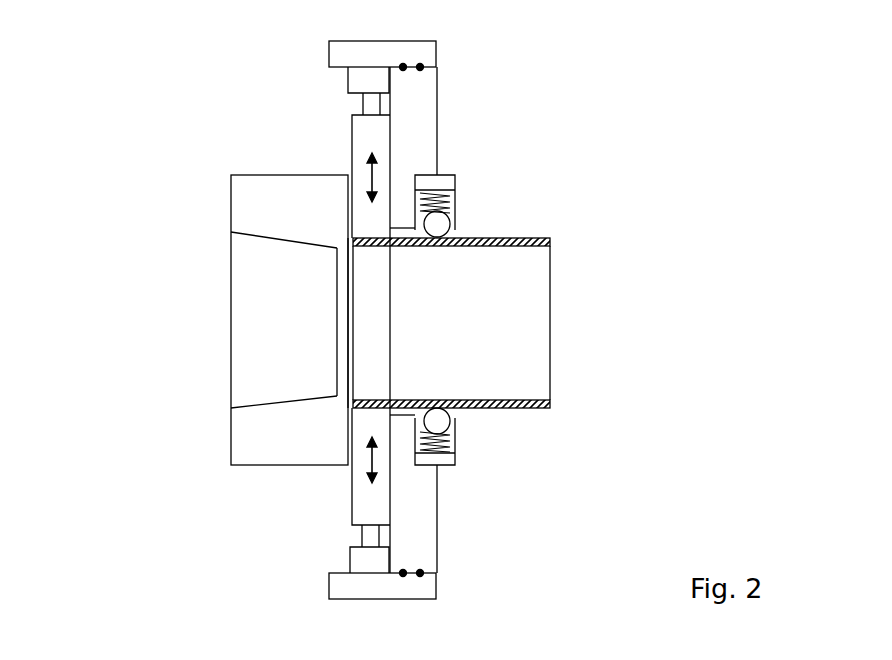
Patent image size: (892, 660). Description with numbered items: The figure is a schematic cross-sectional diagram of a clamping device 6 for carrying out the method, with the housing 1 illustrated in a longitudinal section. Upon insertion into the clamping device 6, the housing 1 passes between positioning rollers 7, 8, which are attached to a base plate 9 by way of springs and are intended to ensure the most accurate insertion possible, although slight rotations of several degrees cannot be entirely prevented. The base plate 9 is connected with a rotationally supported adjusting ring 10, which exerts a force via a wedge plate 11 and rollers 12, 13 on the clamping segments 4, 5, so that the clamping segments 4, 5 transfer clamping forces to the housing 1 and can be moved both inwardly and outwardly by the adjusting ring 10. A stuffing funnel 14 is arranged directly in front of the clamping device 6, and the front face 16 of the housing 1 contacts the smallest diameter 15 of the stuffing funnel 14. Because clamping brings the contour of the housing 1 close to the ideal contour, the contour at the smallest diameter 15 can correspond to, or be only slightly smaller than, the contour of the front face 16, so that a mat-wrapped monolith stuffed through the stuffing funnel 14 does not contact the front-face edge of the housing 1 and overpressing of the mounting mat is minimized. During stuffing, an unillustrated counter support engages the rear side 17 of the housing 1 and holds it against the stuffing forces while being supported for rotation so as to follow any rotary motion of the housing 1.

The housing 1 is at (510, 303).
The clamping segment 4 is at (352, 140).
The clamping segment 5 is at (352, 494).
The clamping device 6 is at (228, 105).
The positioning roller 7 is at (458, 203).
The positioning roller 8 is at (460, 440).
The base plate 9 is at (440, 125).
The adjusting ring 10 is at (438, 55).
The wedge plate 11 is at (347, 80).
The roller 12 is at (358, 102).
The roller 13 is at (360, 536).
The stuffing funnel 14 is at (232, 197).
The smallest diameter 15 is at (346, 279).
The front face 16 is at (350, 360).
The rear side 17 is at (552, 360).